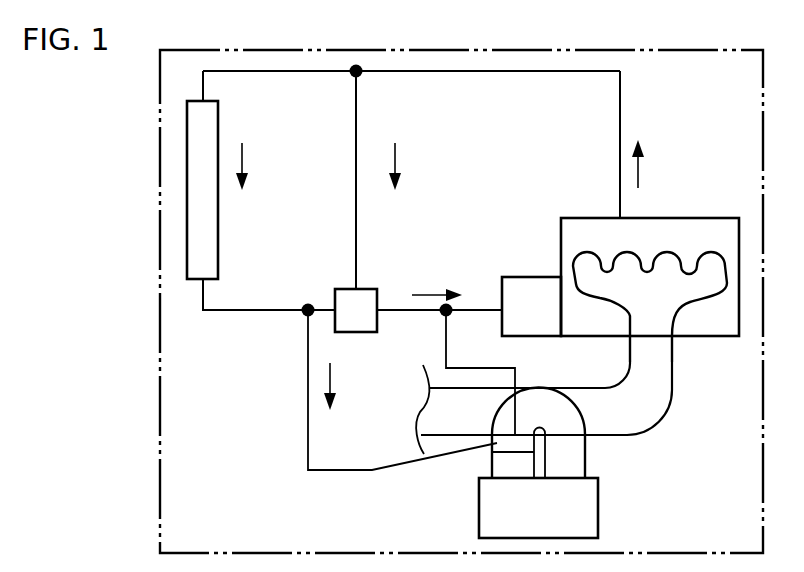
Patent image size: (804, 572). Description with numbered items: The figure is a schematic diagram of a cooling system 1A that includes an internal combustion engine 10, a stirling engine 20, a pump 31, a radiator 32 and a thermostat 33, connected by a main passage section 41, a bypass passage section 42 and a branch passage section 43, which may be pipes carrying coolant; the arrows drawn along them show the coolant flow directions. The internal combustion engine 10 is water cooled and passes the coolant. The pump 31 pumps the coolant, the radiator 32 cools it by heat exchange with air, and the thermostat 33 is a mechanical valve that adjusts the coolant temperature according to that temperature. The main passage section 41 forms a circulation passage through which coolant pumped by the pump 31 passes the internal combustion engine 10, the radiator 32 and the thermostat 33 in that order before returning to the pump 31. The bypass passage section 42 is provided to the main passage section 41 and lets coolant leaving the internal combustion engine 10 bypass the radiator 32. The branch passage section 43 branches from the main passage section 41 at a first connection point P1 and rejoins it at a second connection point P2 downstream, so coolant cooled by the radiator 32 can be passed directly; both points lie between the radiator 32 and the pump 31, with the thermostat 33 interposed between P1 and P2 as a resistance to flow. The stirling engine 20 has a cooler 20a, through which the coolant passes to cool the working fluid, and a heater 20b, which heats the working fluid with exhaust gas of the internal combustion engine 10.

The cooling system 1A is at (160, 107).
The internal combustion engine 10 is at (690, 218).
The stirling engine 20 is at (598, 508).
The cooler 20a is at (496, 446).
The heater 20b is at (575, 413).
The pump 31 is at (528, 277).
The radiator 32 is at (218, 235).
The thermostat 33 is at (350, 289).
The main passage section 41 is at (620, 107).
The bypass passage section 42 is at (356, 107).
The branch passage section 43 is at (308, 422).
The first connection point P1 is at (306, 316).
The second connection point P2 is at (444, 316).